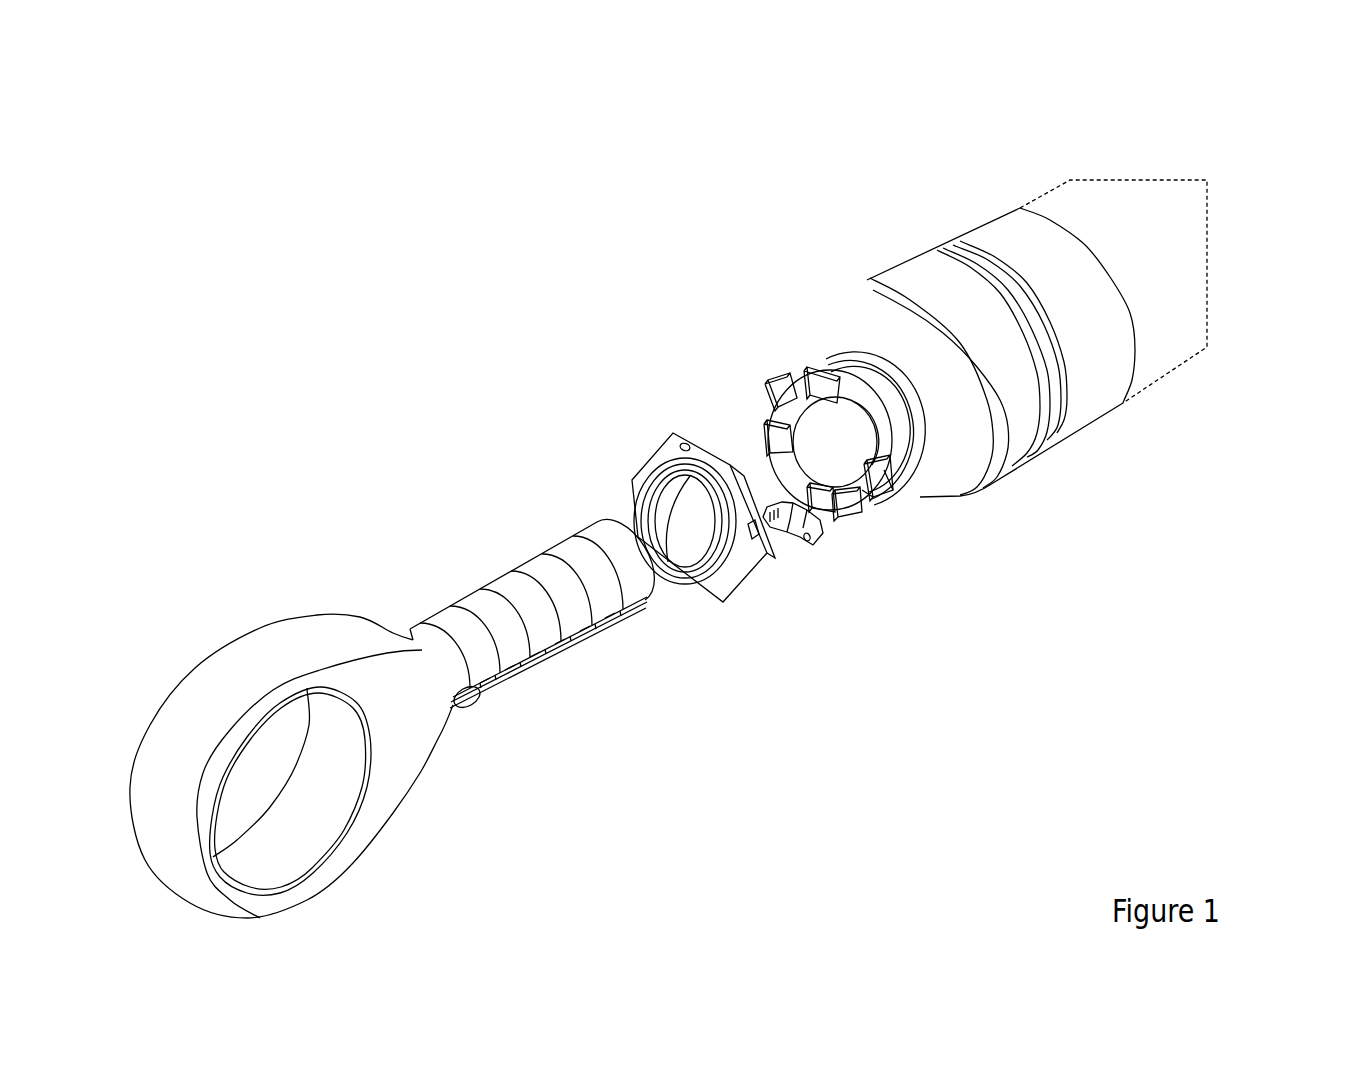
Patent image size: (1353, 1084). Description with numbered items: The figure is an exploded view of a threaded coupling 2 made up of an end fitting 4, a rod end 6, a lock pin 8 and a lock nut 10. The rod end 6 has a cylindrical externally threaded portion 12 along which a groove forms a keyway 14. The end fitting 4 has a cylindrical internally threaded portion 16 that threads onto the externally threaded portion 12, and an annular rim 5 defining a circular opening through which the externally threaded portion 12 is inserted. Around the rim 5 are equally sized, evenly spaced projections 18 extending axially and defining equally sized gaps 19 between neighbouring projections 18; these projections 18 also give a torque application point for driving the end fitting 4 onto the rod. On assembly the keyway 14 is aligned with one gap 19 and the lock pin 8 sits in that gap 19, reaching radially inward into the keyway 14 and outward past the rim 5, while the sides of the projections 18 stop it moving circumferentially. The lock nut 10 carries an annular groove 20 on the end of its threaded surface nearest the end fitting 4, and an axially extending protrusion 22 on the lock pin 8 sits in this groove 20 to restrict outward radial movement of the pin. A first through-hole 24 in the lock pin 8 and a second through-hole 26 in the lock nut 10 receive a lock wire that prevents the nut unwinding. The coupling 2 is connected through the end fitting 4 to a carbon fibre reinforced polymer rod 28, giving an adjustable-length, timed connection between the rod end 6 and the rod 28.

The threaded coupling 2 is at (492, 205).
The end fitting 4 is at (1070, 399).
The annular rim 5 is at (886, 540).
The rod end 6 is at (225, 683).
The lock pin 8 is at (820, 459).
The lock nut 10 is at (595, 532).
The externally threaded portion 12 is at (548, 602).
The keyway 14 is at (610, 610).
The internally threaded portion 16 is at (874, 368).
The projections 18 is at (780, 390).
The gaps 19 is at (880, 473).
The annular groove 20 is at (697, 558).
The protrusion 22 is at (767, 514).
The first through-hole 24 is at (808, 536).
The second through-hole 26 is at (752, 528).
The CFRP rod 28 is at (1183, 307).